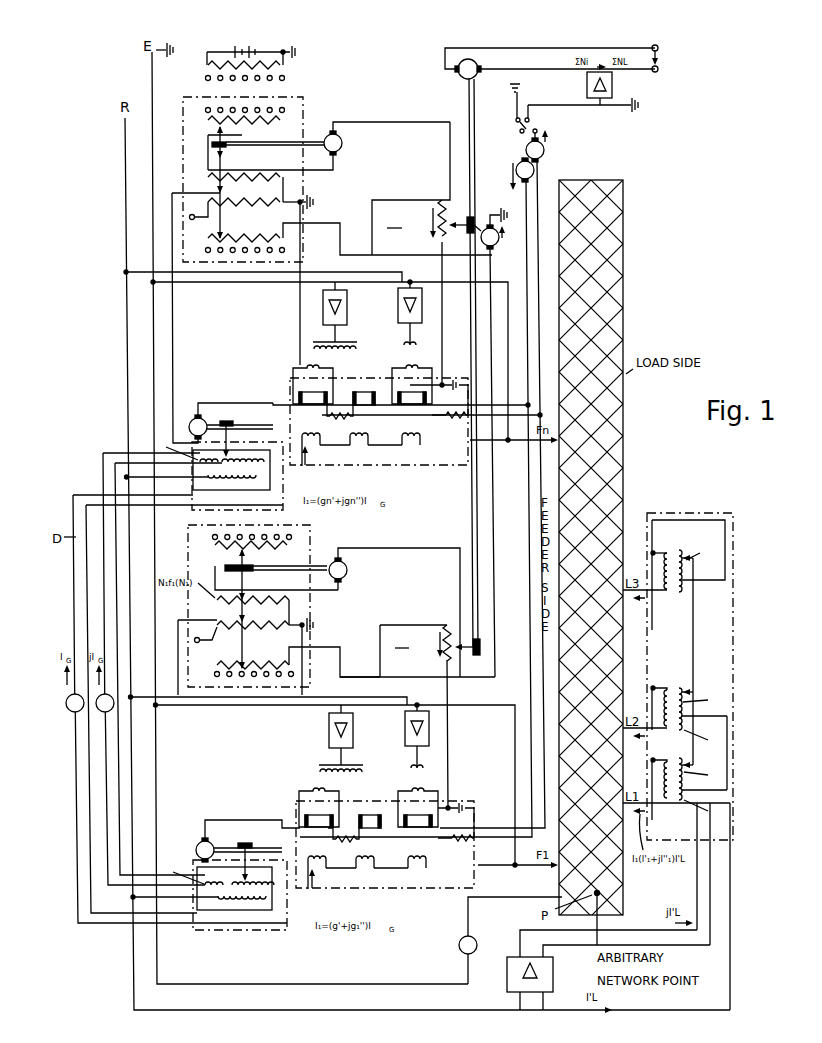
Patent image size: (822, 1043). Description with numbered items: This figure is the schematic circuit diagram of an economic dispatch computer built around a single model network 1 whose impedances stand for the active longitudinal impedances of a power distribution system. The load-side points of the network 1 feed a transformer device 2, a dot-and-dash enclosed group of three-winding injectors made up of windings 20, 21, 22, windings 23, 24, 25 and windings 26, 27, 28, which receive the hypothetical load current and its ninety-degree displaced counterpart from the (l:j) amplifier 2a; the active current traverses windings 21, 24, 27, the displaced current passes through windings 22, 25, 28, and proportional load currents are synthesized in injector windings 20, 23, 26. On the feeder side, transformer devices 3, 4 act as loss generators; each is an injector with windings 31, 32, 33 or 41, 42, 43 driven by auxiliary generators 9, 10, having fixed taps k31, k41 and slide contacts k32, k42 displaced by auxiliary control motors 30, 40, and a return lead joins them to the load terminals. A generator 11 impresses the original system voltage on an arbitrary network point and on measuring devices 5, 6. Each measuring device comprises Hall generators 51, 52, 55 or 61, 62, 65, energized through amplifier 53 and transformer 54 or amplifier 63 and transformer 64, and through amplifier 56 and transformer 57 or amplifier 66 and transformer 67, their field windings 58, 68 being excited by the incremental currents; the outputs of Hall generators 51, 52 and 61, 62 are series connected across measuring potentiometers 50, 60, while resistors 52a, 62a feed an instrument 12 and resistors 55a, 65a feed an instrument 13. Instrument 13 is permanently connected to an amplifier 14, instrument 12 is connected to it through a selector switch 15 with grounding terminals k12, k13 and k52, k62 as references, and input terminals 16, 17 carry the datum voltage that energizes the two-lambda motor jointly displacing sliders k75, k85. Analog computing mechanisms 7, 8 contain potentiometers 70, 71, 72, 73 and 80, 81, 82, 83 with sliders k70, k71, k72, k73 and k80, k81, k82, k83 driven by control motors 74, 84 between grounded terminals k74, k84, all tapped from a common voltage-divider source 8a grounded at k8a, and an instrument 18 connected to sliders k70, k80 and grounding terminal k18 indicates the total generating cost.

The model network 1 is at (562, 724).
The transformer device 2 is at (742, 830).
The (l:j)-amplifier 2a is at (553, 978).
The transformer device 3 is at (247, 936).
The transformer device 4 is at (287, 503).
The measuring device 5 is at (413, 897).
The measuring device 6 is at (380, 474).
The analog computing mechanism 7 is at (189, 600).
The analog computing mechanism 8 is at (186, 140).
The voltage-divider source 8a is at (283, 65).
The auxiliary generator 9 is at (70, 710).
The auxiliary generator 10 is at (104, 712).
The generator 11 is at (477, 945).
The instrument 12 is at (518, 163).
The instrument 13 is at (546, 155).
The amplifier 14 is at (587, 88).
The selector switch 15 is at (516, 122).
The input terminal 16 is at (661, 78).
The input terminal 17 is at (659, 44).
The instrument 18 is at (497, 253).
The injector winding 20 is at (666, 802).
The l_n'-winding 21 is at (680, 806).
The l_n''-winding 22 is at (683, 758).
The injector winding 23 is at (667, 690).
The l_n'-winding 24 is at (674, 731).
The l_n''-winding 25 is at (680, 688).
The injector winding 26 is at (667, 553).
The l_n'-winding 27 is at (675, 592).
The l_n''-winding 28 is at (681, 552).
The auxiliary control motor 30 is at (241, 841).
The injector winding 31 is at (206, 888).
The injector winding 32 is at (268, 890).
The injector winding 33 is at (236, 900).
The auxiliary control motor 40 is at (224, 419).
The injector winding 41 is at (200, 465).
The injector winding 42 is at (241, 445).
The injector winding 43 is at (256, 476).
The measuring potentiometer 50 is at (447, 625).
The Hall generator 51 is at (373, 833).
The Hall generator 52 is at (430, 832).
The ohmic resistor 52a is at (468, 839).
The amplifier 53 is at (405, 717).
The transformer 54 is at (419, 771).
The Hall generator 55 is at (300, 819).
The resistor 55a is at (345, 871).
The amplifier 56 is at (329, 718).
The transformer 57 is at (319, 770).
The magnetic field winding 58 is at (370, 872).
The measuring potentiometer 60 is at (442, 200).
The Hall generator 61 is at (370, 410).
The Hall generator 62 is at (420, 410).
The ohmic resistor 62a is at (462, 420).
The amplifier 63 is at (398, 295).
The transformer 64 is at (417, 348).
The Hall generator 65 is at (296, 395).
The resistor 65a is at (341, 448).
The amplifier 66 is at (323, 295).
The transformer 67 is at (313, 347).
The magnetic field winding 68 is at (363, 449).
The potentiometer rheostat 70 is at (217, 665).
The potentiometer rheostat 71 is at (217, 628).
The potentiometer rheostat 72 is at (217, 600).
The potentiometer rheostat 73 is at (215, 547).
The control motor 74 is at (348, 572).
The voltage divider 80 is at (283, 238).
The potentiometer 81 is at (252, 204).
The potentiometer 82 is at (283, 177).
The voltage divider 83 is at (283, 120).
The control motor 84 is at (342, 143).
The grounding point k8a is at (296, 50).
The grounding terminal k12 is at (520, 98).
The grounding terminal k13 is at (638, 107).
The grounding terminal k18 is at (498, 214).
The injector tap k31 is at (212, 880).
The slide contact k32 is at (249, 878).
The injector tap k41 is at (204, 457).
The slide contact k42 is at (231, 455).
The grounding terminal k52 is at (459, 803).
The grounding terminal k62 is at (451, 380).
The slide contact k70 is at (246, 651).
The slide contact k71 is at (270, 617).
The slide contact k72 is at (245, 597).
The slide contact k73 is at (250, 560).
The grounded terminal k74 is at (315, 624).
The slider k75 is at (464, 658).
The slider k80 is at (200, 221).
The slider k81 is at (212, 191).
The slider k82 is at (222, 167).
The slider k83 is at (266, 182).
The grounded terminal k84 is at (313, 206).
The slider k85 is at (462, 235).